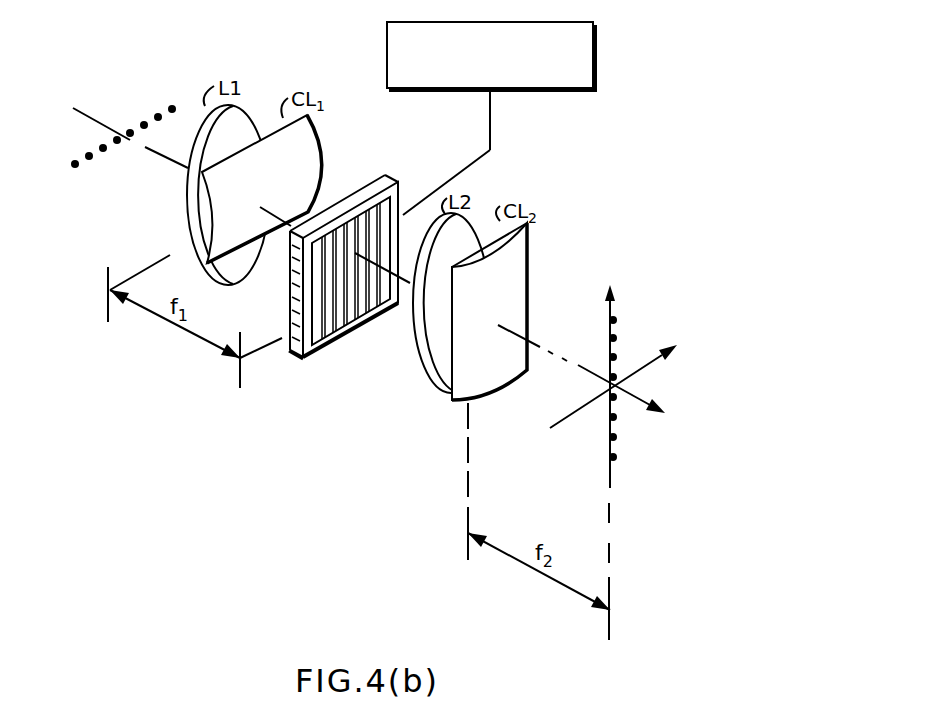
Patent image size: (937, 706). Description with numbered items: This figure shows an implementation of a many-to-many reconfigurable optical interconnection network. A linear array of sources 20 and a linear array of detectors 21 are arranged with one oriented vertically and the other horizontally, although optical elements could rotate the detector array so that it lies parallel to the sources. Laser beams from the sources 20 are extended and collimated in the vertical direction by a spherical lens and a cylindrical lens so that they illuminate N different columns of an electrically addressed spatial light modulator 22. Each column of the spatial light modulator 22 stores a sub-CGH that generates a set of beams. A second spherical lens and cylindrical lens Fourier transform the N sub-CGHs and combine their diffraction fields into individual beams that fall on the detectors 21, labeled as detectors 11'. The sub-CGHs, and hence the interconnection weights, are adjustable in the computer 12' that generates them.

The sources 20 is at (149, 93).
The computer 12' is at (518, 118).
The electrically addressed spatial light modulator (ESLM) 22 is at (330, 341).
The detectors 21 is at (693, 377).
The detectors 11' is at (713, 418).